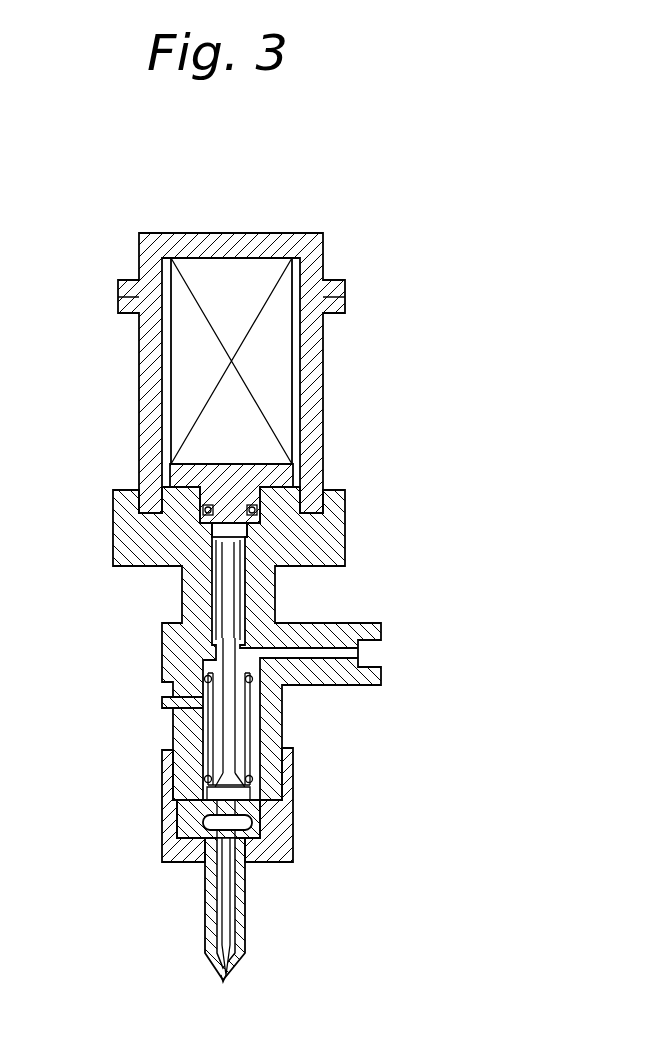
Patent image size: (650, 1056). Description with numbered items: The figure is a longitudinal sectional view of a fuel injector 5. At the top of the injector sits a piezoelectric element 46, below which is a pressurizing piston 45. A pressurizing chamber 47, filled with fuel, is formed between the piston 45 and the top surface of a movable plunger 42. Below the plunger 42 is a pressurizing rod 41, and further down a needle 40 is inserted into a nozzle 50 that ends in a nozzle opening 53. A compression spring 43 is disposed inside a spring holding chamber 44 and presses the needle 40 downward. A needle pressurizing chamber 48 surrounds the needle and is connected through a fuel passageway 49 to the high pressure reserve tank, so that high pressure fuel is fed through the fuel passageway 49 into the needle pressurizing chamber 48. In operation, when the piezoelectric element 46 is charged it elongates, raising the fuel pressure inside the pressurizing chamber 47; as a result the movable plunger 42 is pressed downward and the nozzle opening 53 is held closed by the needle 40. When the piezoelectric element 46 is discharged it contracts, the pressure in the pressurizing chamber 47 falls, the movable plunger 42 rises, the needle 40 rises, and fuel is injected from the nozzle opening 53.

The fuel injector 5 is at (323, 231).
The piezoelectric element 46 is at (281, 388).
The pressurizing piston 45 is at (175, 474).
The pressurizing chamber 47 is at (217, 536).
The movable plunger 42 is at (218, 591).
The spring holding chamber 44 is at (203, 688).
The pressurizing rod 41 is at (225, 732).
The compression spring 43 is at (225, 781).
The needle pressurizing chamber 48 is at (210, 821).
The needle 40 is at (223, 893).
The fuel passageway 49 is at (333, 654).
The nozzle 50 is at (248, 921).
The nozzle opening 53 is at (225, 983).